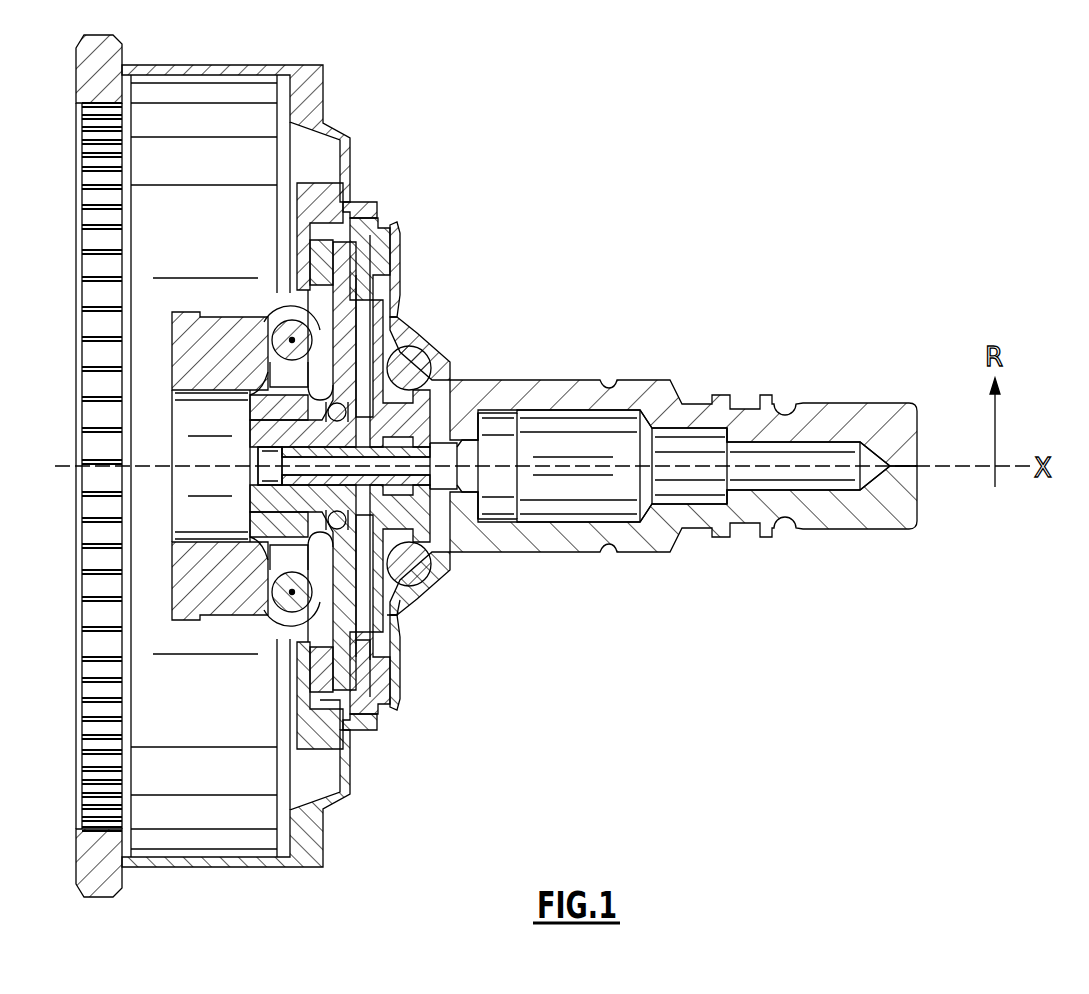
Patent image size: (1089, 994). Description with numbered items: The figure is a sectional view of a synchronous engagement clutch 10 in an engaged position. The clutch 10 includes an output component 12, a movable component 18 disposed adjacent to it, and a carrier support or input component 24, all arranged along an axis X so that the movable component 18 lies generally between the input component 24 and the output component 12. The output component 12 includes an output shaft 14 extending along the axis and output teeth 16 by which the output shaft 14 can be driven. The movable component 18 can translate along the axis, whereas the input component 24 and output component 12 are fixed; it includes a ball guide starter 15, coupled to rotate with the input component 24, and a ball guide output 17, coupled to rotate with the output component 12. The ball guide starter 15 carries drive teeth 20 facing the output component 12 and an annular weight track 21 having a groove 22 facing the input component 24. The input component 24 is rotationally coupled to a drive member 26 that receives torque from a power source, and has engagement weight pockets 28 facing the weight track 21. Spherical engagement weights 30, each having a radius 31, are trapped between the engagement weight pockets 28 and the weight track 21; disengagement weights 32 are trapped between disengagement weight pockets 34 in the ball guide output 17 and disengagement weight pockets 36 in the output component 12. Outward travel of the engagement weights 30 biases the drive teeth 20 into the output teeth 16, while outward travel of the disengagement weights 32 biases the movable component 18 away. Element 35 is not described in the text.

The synchronous engagement clutch 10 is at (935, 740).
The output component 12 is at (450, 568).
The output shaft 14 is at (588, 552).
The ball guide starter 15 is at (372, 655).
The output teeth 16 is at (388, 245).
The ball guide output 17 is at (383, 600).
The movable component 18 is at (463, 626).
The drive teeth 20 is at (365, 252).
The annular weight track 21 is at (288, 683).
The groove 22 is at (305, 295).
The input component 24 is at (260, 640).
The drive member 26 is at (262, 64).
The engagement weight pockets 28 is at (272, 405).
The engagement weights 30 is at (277, 530).
The radius 31 is at (285, 348).
The disengagement weights 32 is at (412, 595).
The disengagement weight pockets 34 is at (397, 312).
The retainer 35 is at (345, 703).
The disengagement weight pockets 36 is at (418, 345).